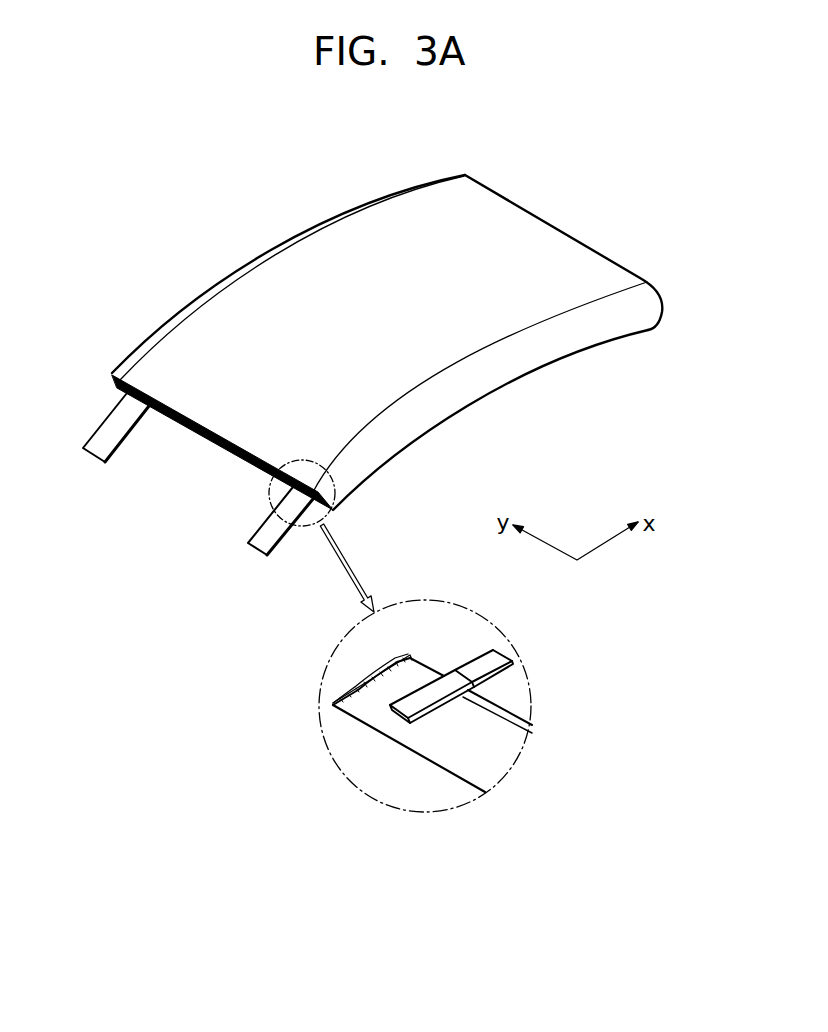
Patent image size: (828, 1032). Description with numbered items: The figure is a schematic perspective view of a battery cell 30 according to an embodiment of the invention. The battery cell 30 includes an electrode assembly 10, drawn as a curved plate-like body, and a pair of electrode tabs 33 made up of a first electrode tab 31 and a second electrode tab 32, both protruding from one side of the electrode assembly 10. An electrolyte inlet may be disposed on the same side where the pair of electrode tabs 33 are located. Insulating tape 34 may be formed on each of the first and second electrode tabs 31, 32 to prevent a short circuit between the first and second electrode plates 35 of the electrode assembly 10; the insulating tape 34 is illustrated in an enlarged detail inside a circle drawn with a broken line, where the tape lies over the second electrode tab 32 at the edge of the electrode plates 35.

The battery cell 30 is at (580, 215).
The electrode assembly 10 is at (476, 396).
The first electrode tab 31 is at (95, 453).
The second electrode tab 32 is at (384, 601).
The pair of electrode tabs 33 is at (334, 554).
The insulating tape 34 is at (435, 705).
The electrode plates 35 is at (447, 758).